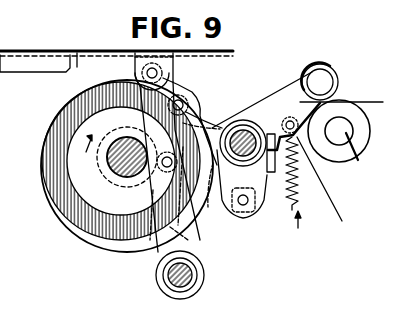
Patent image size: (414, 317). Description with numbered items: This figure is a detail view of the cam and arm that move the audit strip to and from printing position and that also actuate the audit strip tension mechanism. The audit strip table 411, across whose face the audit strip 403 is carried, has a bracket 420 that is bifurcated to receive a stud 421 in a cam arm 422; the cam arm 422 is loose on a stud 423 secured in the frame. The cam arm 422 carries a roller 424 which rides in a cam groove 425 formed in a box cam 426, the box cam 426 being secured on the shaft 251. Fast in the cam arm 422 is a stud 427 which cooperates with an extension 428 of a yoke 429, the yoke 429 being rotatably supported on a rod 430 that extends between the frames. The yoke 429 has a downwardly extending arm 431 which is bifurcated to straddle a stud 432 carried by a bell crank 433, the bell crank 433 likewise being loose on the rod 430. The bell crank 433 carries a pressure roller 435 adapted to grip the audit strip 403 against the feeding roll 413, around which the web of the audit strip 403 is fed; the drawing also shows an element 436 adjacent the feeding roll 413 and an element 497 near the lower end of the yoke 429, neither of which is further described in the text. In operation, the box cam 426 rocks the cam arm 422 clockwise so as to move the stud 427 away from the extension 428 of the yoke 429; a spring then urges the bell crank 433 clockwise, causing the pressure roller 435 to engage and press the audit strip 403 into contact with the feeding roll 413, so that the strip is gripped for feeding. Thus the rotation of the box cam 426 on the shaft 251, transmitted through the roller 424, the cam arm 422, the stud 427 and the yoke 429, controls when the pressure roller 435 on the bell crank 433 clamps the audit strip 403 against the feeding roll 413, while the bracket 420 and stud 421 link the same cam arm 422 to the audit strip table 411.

The audit strip table 411 is at (77, 67).
The bracket 420 is at (134, 66).
The stud 421 is at (160, 72).
The cam arm 422 is at (171, 88).
The stud 427 is at (185, 103).
The extension 428 is at (226, 118).
The rod 430 is at (240, 143).
The bell crank 433 is at (286, 100).
The pressure roller 435 is at (338, 76).
The audit strip 403 is at (354, 89).
The feeding roll 413 is at (348, 163).
The cam lobe 436 is at (358, 160).
The cam groove 425 is at (64, 110).
The box cam 426 is at (87, 238).
The shaft 251 is at (112, 172).
The roller 424 is at (170, 167).
The stud 423 is at (168, 274).
The arm 431 is at (218, 210).
The stud 432 is at (246, 206).
The yoke 429 is at (292, 208).
The pointer 497 is at (301, 215).